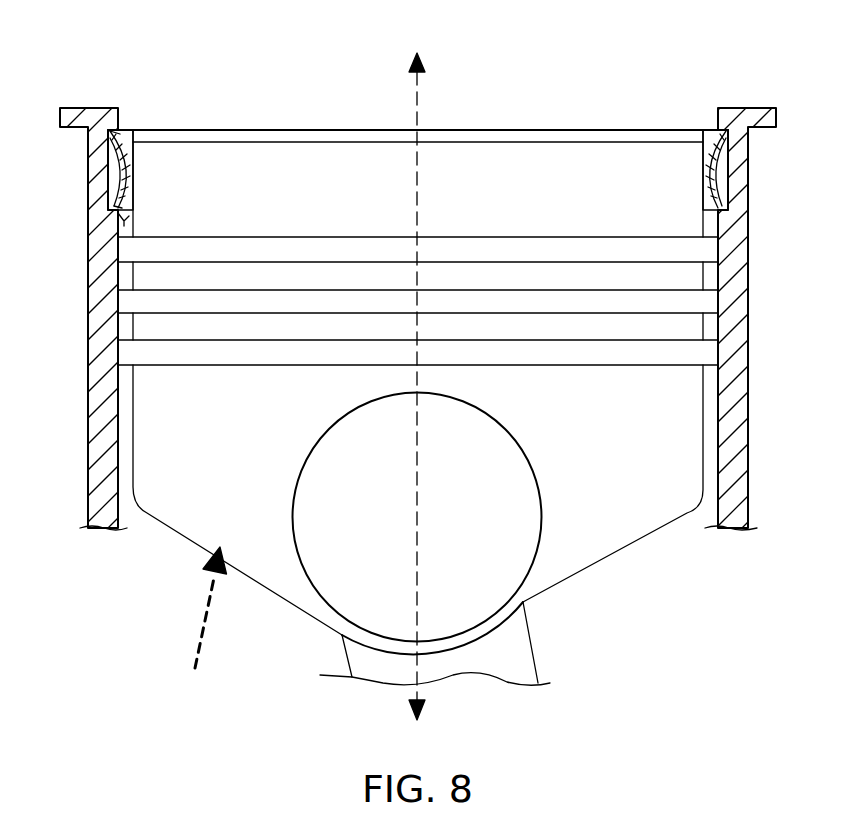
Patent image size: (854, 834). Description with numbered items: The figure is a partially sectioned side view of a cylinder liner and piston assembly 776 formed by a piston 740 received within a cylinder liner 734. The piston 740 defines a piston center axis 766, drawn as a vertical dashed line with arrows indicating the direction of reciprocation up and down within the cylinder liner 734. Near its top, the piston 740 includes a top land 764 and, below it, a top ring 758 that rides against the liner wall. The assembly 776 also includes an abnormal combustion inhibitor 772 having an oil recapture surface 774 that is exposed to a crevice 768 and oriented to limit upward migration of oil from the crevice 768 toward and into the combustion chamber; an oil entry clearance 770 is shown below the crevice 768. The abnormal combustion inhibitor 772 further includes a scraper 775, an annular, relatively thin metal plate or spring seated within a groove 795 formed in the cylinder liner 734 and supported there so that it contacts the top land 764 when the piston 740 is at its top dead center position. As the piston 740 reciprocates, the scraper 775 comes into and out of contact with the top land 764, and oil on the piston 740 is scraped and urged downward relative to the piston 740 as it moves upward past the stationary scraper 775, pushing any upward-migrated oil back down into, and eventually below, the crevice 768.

The cylinder liner 734 is at (93, 300).
The piston 740 is at (622, 530).
The top ring 758 is at (273, 243).
The top land 764 is at (110, 190).
The piston center axis 766 is at (418, 95).
The crevice 768 is at (117, 213).
The oil entry clearance 770 is at (117, 247).
The abnormal combustion inhibitor 772 is at (140, 114).
The oil recapture surface 774 is at (135, 205).
The scraper 775 is at (135, 147).
The cylinder liner and piston assembly 776 is at (608, 70).
The groove 795 is at (110, 168).